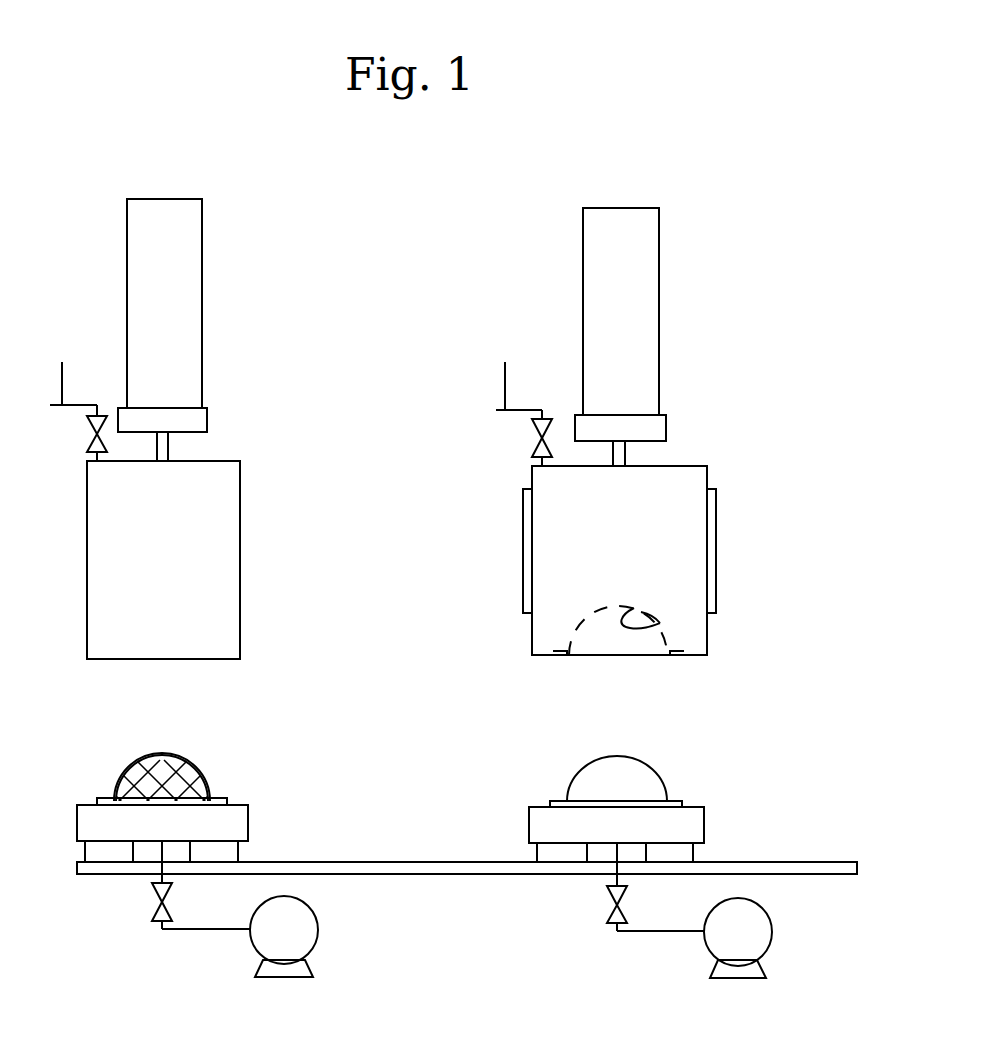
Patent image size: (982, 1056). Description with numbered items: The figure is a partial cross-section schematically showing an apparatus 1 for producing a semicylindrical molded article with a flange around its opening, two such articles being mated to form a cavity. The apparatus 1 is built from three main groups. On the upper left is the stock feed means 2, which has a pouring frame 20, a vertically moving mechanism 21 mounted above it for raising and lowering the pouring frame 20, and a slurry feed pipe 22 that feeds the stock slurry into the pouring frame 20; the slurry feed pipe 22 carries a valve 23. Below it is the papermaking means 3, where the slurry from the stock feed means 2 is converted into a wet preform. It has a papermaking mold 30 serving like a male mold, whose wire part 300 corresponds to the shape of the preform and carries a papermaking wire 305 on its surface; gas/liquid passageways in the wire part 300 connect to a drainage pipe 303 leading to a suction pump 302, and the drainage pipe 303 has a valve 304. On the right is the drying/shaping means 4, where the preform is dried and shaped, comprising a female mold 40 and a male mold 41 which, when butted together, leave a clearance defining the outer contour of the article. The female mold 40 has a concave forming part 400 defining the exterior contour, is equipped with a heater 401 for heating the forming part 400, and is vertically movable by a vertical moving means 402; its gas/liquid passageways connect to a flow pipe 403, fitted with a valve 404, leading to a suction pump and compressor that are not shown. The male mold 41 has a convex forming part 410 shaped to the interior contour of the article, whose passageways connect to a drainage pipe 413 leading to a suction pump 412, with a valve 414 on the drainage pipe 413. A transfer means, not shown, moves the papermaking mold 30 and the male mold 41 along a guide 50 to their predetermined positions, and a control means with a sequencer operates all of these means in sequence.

The apparatus 1 is at (464, 178).
The stock feed means 2 is at (102, 324).
The pouring frame 20 is at (240, 558).
The vertically moving mechanism 21 is at (203, 287).
The slurry feed pipe 22 is at (70, 368).
The valve 23 is at (94, 434).
The papermaking means 3 is at (248, 733).
The papermaking mold 30 is at (248, 805).
The wire part 300 is at (117, 779).
The papermaking wire 305 is at (140, 759).
The suction pump 302 is at (282, 978).
The drainage pipe 303 is at (205, 930).
The valve 304 is at (159, 902).
The drying/shaping means 4 is at (786, 468).
The female mold 40 is at (707, 650).
The concave forming part 400 is at (634, 608).
The heater 401 is at (716, 540).
The vertical moving means 402 is at (659, 366).
The flow pipe 403 is at (515, 371).
The valve 404 is at (539, 438).
The male mold 41 is at (704, 811).
The convex forming part 410 is at (655, 771).
The suction pump 412 is at (740, 979).
The drainage pipe 413 is at (655, 932).
The valve 414 is at (614, 905).
The guide 50 is at (817, 862).